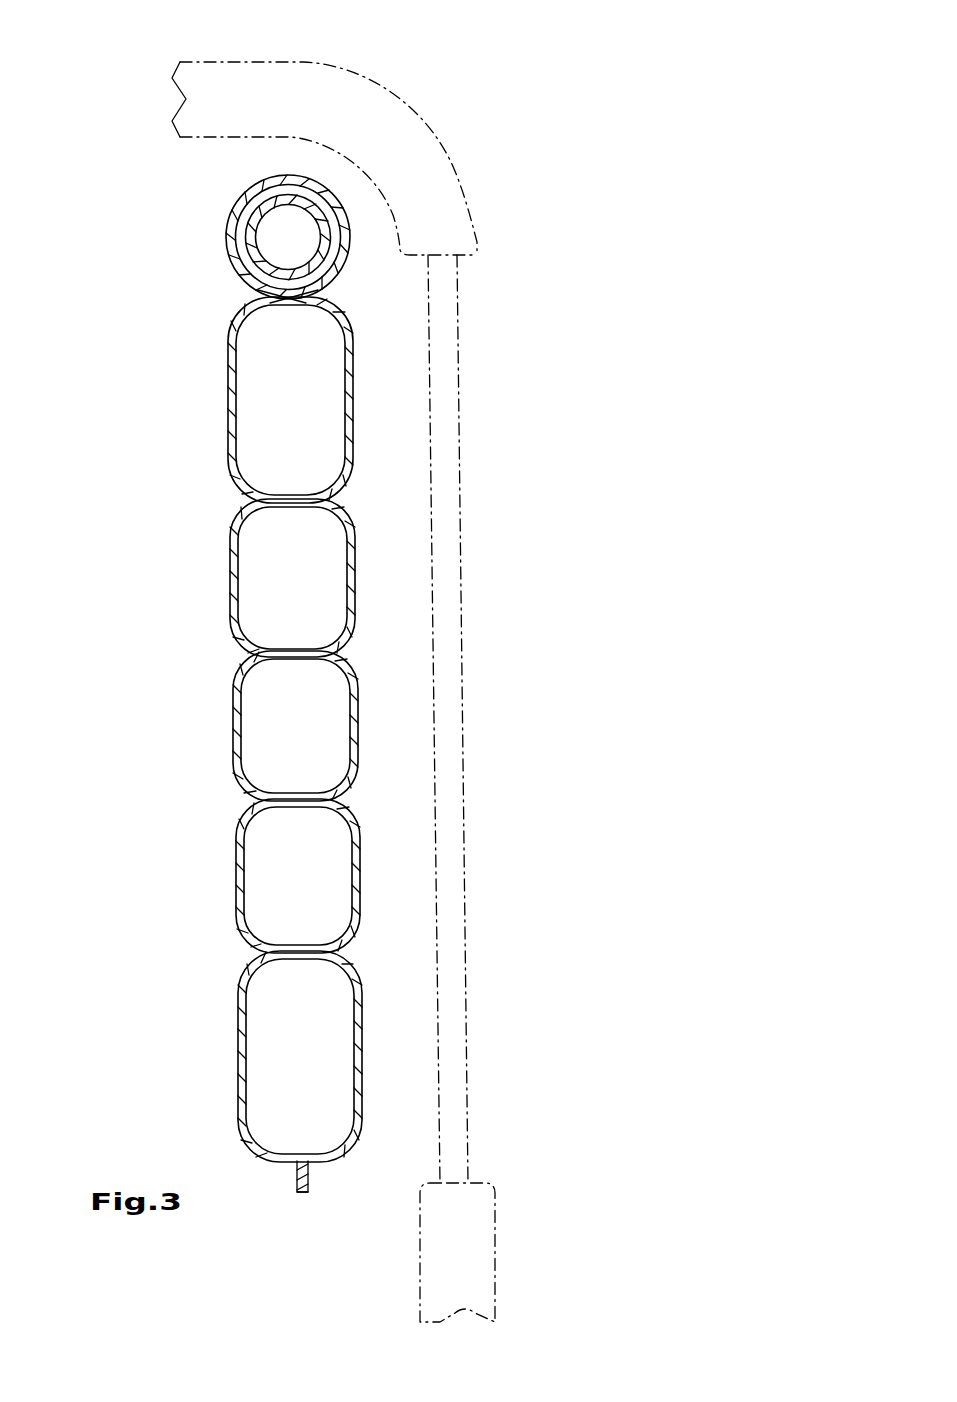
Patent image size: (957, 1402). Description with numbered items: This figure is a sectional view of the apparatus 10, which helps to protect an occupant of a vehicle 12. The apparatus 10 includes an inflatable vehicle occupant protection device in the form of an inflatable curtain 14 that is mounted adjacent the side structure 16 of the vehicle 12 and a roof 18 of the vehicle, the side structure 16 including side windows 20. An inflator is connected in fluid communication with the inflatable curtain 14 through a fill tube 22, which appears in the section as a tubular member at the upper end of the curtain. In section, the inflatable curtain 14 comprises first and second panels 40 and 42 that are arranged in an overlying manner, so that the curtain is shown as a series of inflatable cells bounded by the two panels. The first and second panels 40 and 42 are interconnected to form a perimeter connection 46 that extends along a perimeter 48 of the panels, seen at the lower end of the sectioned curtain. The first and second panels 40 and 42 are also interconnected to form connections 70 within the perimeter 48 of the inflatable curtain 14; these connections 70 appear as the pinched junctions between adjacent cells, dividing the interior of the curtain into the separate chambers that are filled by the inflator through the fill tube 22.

The apparatus 10 is at (134, 271).
The vehicle 12 is at (472, 130).
The inflatable curtain 14 is at (232, 341).
The side structure 16 is at (462, 238).
The roof 18 is at (307, 100).
The side windows 20 is at (452, 833).
The fill tube 22 is at (253, 232).
The first panel 40 is at (284, 578).
The second panel 42 is at (232, 566).
The perimeter connection 46 is at (297, 1175).
The perimeter 48 is at (301, 1193).
The connections 70 is at (262, 292).